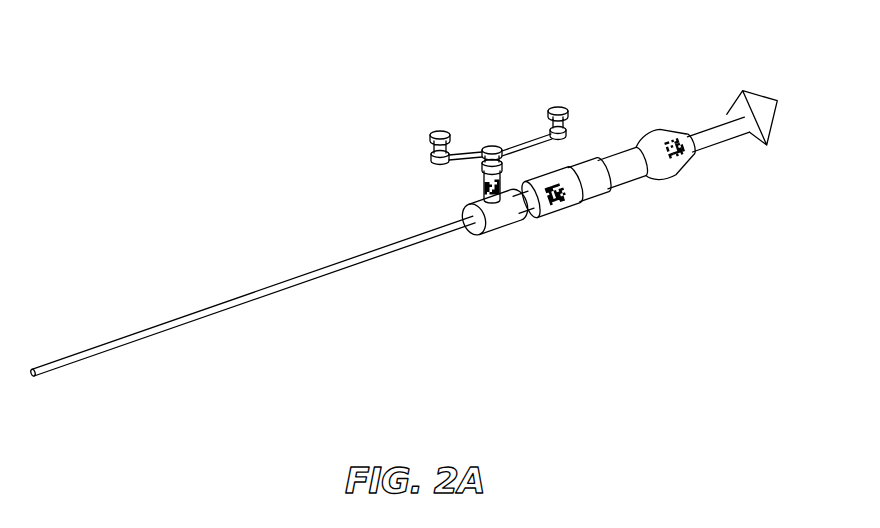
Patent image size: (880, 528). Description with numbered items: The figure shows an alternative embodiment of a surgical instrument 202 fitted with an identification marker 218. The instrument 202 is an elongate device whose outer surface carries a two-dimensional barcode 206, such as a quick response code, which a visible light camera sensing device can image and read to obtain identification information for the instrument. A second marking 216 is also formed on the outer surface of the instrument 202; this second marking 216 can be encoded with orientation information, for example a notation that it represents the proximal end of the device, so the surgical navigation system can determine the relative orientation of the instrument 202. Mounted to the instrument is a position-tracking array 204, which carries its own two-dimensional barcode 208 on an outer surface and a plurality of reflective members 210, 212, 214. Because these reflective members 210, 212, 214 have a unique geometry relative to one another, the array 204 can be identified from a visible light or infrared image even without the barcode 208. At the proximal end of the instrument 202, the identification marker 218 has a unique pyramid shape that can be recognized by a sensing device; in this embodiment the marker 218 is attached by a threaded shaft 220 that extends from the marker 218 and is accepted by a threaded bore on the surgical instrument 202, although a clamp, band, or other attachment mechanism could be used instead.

The surgical instrument 202 is at (279, 291).
The position-tracking array 204 is at (527, 141).
The two-dimensional barcode 206 is at (560, 209).
The two-dimensional barcode 208 is at (483, 205).
The reflective member 210 is at (486, 147).
The reflective member 212 is at (430, 137).
The reflective member 214 is at (569, 119).
The second marking 216 is at (682, 153).
The identification marker 218 is at (762, 96).
The threaded shaft 220 is at (706, 128).